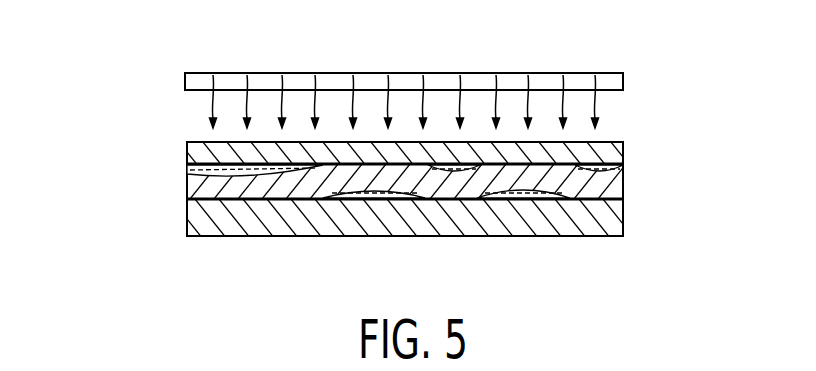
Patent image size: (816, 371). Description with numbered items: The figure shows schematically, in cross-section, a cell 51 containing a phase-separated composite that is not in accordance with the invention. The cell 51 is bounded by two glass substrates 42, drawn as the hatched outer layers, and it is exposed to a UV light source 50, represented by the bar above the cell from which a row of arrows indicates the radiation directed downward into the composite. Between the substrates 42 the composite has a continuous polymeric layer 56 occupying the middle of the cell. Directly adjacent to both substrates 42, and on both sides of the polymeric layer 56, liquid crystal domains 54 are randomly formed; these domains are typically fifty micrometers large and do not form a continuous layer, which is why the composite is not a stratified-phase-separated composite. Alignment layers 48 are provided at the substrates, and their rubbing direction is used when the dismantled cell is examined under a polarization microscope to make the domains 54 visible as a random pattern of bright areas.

The glass substrates 42 is at (187, 155).
The alignment layers 48 is at (331, 166).
The UV light source 50 is at (410, 73).
The cell 51 is at (133, 127).
The liquid crystal domains 54 is at (450, 171).
The polymeric layer 56 is at (543, 173).